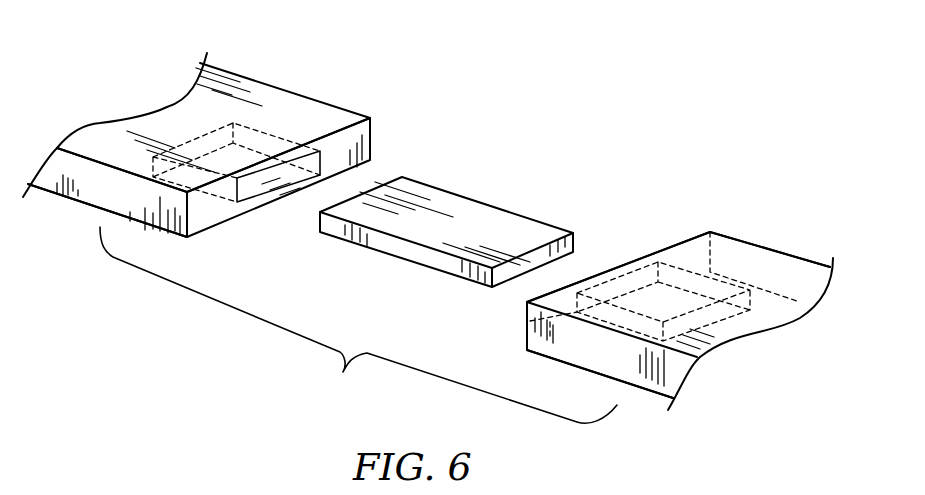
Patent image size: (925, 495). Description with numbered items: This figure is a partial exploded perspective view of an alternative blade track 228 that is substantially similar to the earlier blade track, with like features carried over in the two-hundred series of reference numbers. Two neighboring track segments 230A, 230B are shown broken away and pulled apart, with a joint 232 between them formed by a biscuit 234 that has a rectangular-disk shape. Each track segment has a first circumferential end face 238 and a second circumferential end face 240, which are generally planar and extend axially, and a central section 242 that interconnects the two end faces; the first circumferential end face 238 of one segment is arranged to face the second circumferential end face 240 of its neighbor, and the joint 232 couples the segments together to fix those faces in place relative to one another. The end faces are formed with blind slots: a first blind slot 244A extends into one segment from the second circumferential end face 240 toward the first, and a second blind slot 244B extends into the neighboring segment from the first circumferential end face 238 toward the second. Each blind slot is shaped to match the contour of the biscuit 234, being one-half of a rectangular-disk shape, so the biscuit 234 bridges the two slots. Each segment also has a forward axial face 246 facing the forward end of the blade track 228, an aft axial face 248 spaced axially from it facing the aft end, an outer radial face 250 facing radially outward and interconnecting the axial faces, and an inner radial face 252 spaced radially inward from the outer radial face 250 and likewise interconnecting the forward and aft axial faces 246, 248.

The blade track 228 is at (618, 92).
The track segment 230A is at (235, 82).
The track segment 230B is at (765, 265).
The joint 232 is at (459, 140).
The biscuit 234 is at (480, 220).
The first circumferential end face 238 is at (527, 320).
The second circumferential end face 240 is at (205, 218).
The central section 242 is at (115, 138).
The first blind slot 244A is at (322, 173).
The second blind slot 244B is at (632, 292).
The forward axial face 246 is at (93, 192).
The aft axial face 248 is at (277, 103).
The outer radial face 250 is at (173, 111).
The inner radial face 252 is at (130, 217).